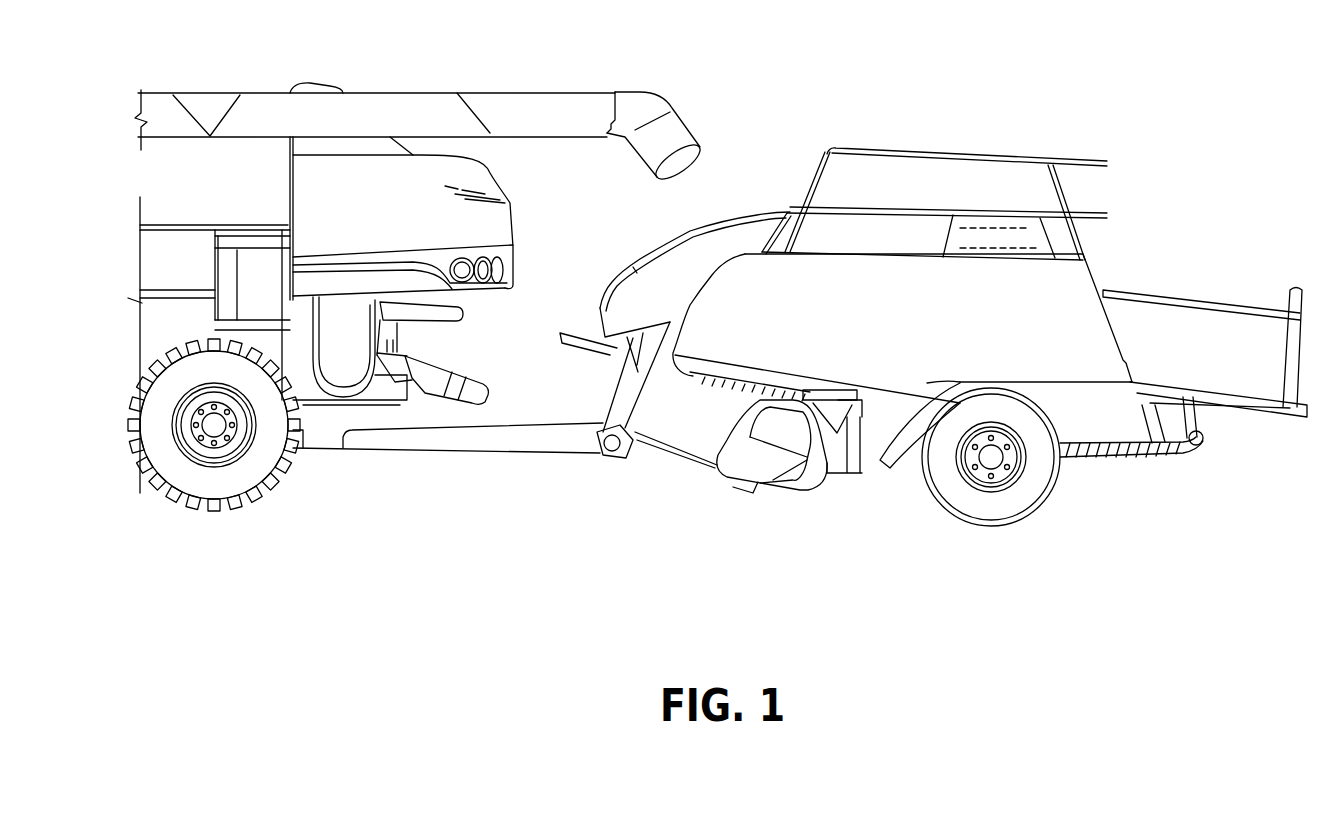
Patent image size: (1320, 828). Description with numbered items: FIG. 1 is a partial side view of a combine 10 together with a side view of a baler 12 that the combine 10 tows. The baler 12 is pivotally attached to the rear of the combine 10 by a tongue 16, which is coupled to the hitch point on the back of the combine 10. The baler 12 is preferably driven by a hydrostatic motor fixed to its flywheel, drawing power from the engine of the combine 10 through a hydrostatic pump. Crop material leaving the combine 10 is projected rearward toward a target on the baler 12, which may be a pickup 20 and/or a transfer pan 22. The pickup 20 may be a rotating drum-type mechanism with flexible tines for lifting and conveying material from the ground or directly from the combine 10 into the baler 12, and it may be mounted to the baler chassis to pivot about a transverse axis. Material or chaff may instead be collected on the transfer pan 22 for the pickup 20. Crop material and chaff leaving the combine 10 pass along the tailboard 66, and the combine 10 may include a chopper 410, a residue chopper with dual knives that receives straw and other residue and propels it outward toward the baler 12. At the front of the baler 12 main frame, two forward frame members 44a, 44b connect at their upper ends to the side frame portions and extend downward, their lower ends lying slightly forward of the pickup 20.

The combine 10 is at (541, 57).
The baler 12 is at (1108, 139).
The tongue 16 is at (483, 442).
The pickup 20 is at (760, 475).
The transfer pan 22 is at (672, 453).
The forward frame member 44a is at (620, 400).
The forward frame member 44b is at (636, 377).
The tailboard 66 is at (450, 370).
The chopper 410 is at (357, 402).